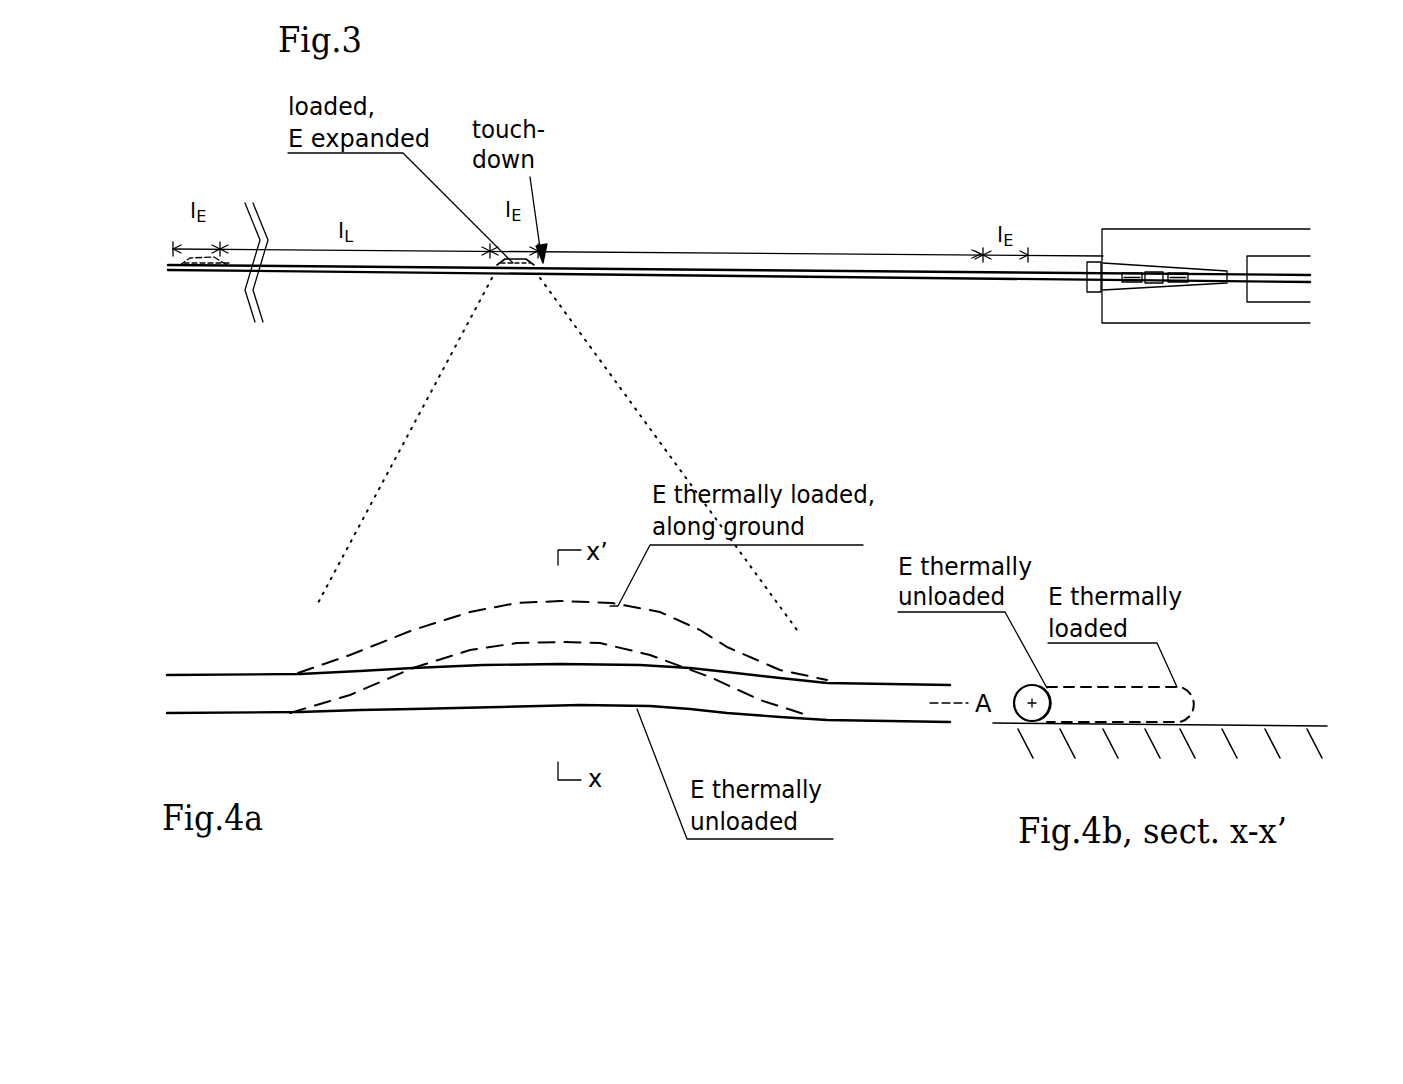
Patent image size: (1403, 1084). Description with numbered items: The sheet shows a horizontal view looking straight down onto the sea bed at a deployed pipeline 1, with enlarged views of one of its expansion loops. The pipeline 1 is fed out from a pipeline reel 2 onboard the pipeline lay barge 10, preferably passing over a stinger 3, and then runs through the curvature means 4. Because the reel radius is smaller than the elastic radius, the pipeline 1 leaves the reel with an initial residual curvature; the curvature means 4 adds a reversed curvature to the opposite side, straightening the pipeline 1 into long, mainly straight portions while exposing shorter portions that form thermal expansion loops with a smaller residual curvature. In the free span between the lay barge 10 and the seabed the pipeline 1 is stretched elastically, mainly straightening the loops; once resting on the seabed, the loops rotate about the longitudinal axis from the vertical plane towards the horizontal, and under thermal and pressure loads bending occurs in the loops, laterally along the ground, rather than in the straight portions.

The pipeline 1 is at (427, 275).
The pipeline reel 2 is at (1305, 305).
The stinger 3 is at (1190, 258).
The curvature means 4 is at (1152, 285).
The pipeline lay barge 10 is at (1242, 228).